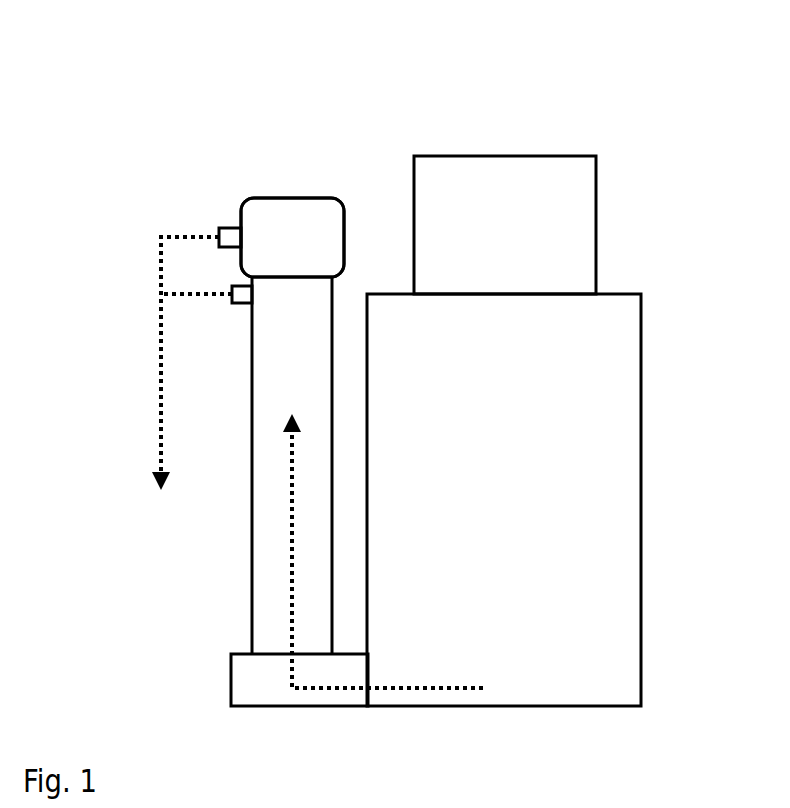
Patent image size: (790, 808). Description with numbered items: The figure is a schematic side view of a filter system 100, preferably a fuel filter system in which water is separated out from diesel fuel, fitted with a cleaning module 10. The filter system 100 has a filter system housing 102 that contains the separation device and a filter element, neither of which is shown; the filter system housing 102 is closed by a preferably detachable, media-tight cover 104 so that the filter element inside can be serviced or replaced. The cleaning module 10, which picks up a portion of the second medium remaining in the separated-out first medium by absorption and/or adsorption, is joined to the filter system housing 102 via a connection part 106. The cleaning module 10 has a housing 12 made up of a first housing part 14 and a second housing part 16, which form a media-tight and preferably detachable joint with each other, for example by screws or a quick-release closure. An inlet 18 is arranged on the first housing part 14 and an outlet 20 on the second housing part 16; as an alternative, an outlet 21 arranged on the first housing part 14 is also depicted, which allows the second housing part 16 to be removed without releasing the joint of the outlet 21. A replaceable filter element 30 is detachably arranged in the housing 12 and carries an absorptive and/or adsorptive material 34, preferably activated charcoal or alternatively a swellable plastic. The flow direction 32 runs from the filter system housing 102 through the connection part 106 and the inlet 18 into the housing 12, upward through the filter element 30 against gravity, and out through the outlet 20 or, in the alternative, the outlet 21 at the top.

The filter system 100 is at (603, 110).
The filter system housing 102 is at (641, 388).
The cover 104 is at (596, 175).
The connection part 106 is at (231, 691).
The cleaning module 10 is at (269, 186).
The housing 12 is at (310, 198).
The second housing part 16 is at (292, 237).
The first housing part 14 is at (252, 596).
The outlet 20 is at (232, 228).
The outlet 21 is at (232, 286).
The filter element 30 is at (243, 338).
The absorptive and/or adsorptive material 34 is at (290, 385).
The inlet 18 is at (268, 653).
The flow direction 32 is at (160, 408).